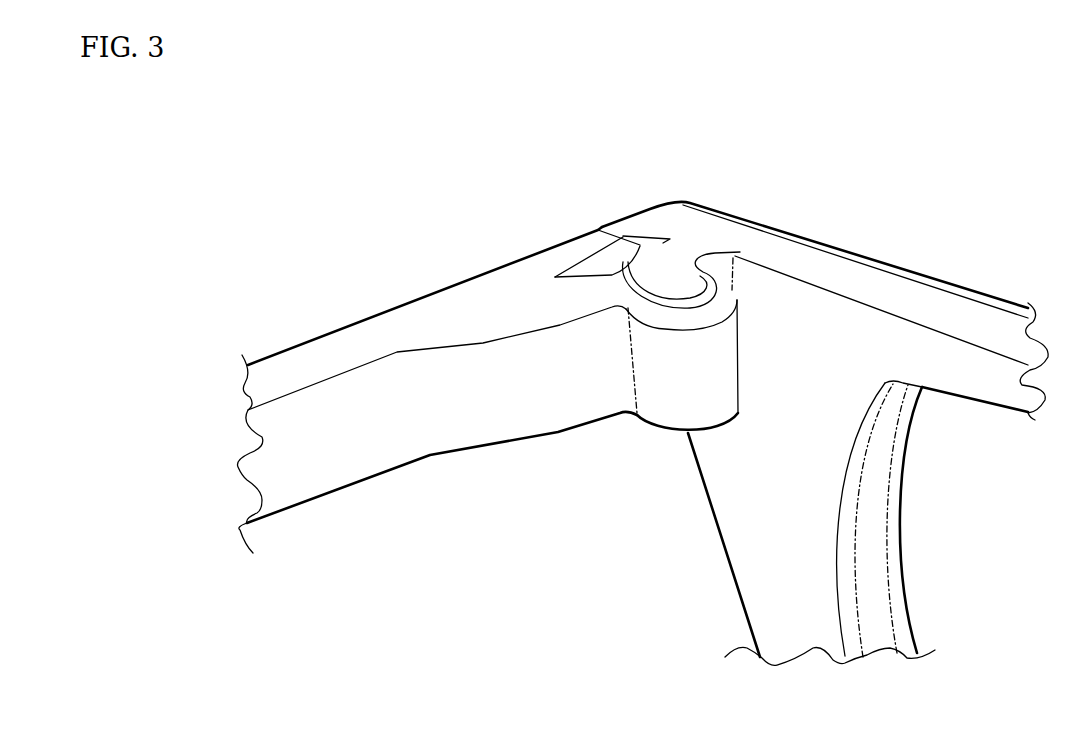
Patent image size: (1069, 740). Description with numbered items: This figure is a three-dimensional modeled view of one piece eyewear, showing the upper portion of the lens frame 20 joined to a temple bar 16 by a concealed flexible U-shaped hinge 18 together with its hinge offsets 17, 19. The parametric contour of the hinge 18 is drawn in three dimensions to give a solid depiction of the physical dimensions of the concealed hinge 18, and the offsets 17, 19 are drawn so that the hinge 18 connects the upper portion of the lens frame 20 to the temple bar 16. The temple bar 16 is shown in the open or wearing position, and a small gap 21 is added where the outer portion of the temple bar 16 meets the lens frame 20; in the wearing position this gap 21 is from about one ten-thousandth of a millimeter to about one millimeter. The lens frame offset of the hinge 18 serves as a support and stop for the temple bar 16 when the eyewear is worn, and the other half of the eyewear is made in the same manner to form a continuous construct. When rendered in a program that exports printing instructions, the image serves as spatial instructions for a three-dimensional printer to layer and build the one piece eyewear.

The temple bar 16 is at (432, 390).
The hinge offset 17 is at (520, 422).
The flexible U-shaped hinge 18 is at (675, 443).
The hinge offset 19 is at (668, 253).
The lens frame 20 is at (825, 434).
The gap 21 is at (598, 218).